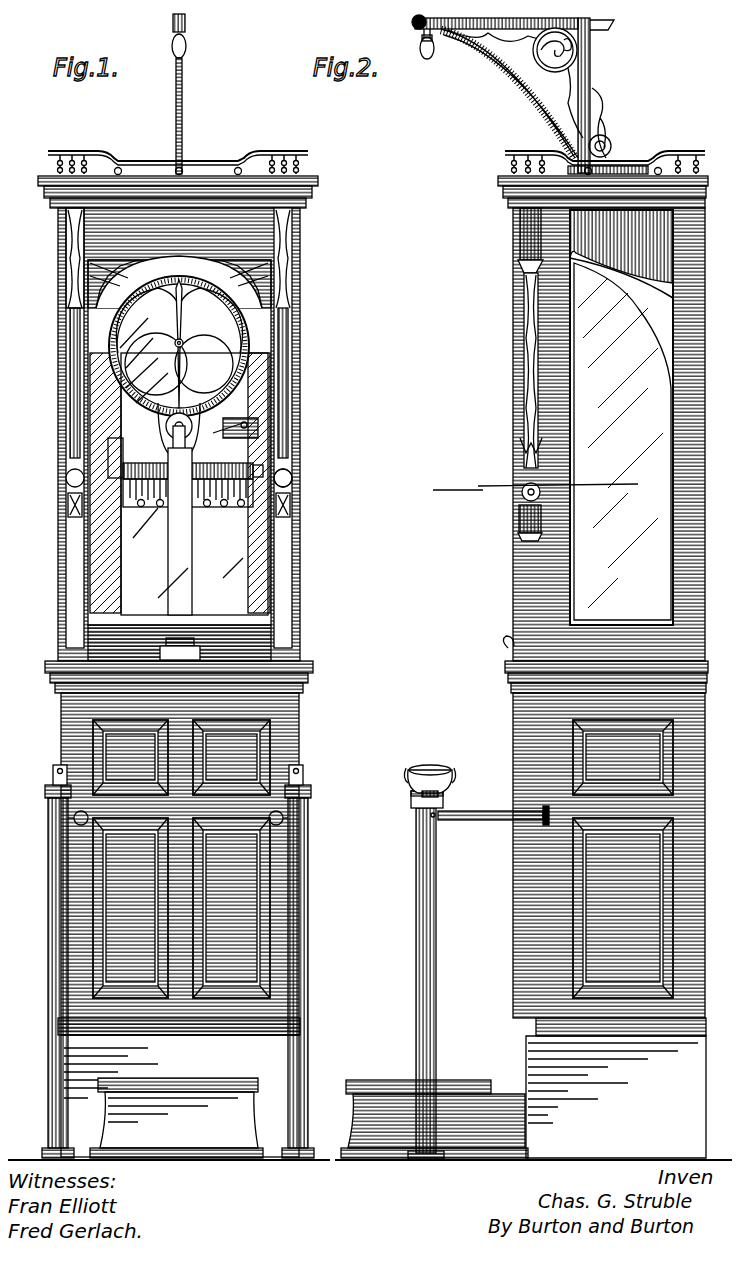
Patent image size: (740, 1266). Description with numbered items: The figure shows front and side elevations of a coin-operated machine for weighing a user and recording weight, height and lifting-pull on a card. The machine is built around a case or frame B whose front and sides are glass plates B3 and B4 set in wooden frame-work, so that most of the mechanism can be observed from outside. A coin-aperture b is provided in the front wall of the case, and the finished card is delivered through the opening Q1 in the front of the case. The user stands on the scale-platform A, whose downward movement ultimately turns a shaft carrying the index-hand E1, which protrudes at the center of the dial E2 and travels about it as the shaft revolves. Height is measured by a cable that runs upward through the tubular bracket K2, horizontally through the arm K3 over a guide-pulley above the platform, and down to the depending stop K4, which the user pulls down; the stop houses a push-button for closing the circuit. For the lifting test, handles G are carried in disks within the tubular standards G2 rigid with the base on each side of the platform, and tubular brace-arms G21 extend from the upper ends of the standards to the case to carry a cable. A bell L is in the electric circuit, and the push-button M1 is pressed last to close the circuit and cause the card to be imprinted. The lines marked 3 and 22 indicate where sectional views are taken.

In FIG. 1, the depending stop K4 is at (178, 43).
In FIG. 2, the depending stop K4 is at (412, 50).
In FIG. 2, the arm K3 is at (512, 93).
In FIG. 2, the tubular bracket K2 is at (599, 95).
In FIG. 1, the coin-aperture b is at (56, 296).
In FIG. 1, the dial E2 is at (179, 346).
In FIG. 1, the index-hand E1 is at (206, 344).
In FIG. 1, the push-button M1 is at (285, 470).
In FIG. 2, the push-button M1 is at (513, 493).
In FIG. 1, the section line 3 3 is at (193, 457).
In FIG. 1, the front glass plate B3 is at (188, 484).
In FIG. 1, the case B is at (178, 654).
In FIG. 2, the side glass plate B4 is at (610, 490).
In FIG. 1, the opening in front of case Q1 is at (186, 630).
In FIG. 2, the section line 22 22 is at (520, 478).
In FIG. 1, the handle G is at (44, 766).
In FIG. 2, the handle G is at (419, 765).
In FIG. 1, the tubular brace-arm G21 is at (276, 813).
In FIG. 2, the tubular brace-arm G21 is at (480, 812).
In FIG. 1, the tubular standard G2 is at (308, 932).
In FIG. 2, the tubular standard G2 is at (436, 975).
In FIG. 1, the bell L is at (176, 1118).
In FIG. 2, the scale-platform A is at (434, 1109).